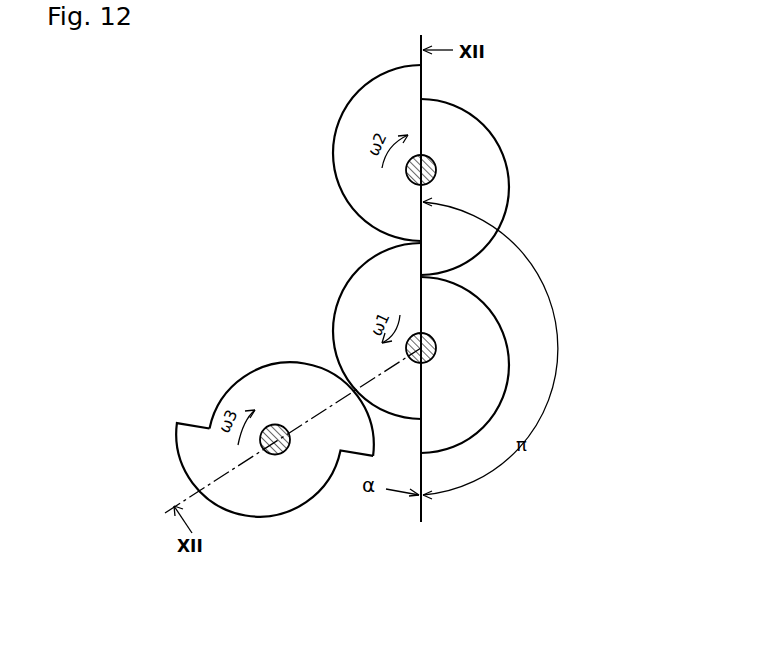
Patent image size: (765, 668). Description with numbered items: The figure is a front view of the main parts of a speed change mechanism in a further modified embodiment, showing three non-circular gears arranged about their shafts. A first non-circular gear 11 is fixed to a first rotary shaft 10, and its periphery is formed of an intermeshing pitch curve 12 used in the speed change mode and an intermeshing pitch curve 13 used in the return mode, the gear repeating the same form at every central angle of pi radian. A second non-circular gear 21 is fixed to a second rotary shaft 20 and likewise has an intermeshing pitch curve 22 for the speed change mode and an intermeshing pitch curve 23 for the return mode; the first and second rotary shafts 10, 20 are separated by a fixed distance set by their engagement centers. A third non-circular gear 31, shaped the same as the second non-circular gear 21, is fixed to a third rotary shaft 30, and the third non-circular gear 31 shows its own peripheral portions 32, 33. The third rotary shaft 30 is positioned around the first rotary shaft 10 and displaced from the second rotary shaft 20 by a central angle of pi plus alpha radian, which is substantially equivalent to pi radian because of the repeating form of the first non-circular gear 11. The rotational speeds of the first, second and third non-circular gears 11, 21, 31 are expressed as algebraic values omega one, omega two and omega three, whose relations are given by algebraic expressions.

The first rotary shaft 10 is at (422, 333).
The first non-circular gear 11 is at (489, 365).
The intermeshing pitch curve of the first non-circular gear in the speed change mode 12 is at (500, 403).
The intermeshing pitch curve of the first non-circular gear in the return mode 13 is at (367, 292).
The second rotary shaft 20 is at (429, 157).
The second non-circular gear 21 is at (491, 187).
The intermeshing pitch curve of the second non-circular gear in the speed change mod 22 is at (508, 203).
The intermeshing pitch curve of the second non-circular gear in the return mode 23 is at (348, 110).
The third rotary shaft 30 is at (288, 452).
The third non-circular gear 31 is at (274, 502).
The outer periphery of third cam 32 is at (242, 522).
The second half of third cam 33 is at (248, 368).